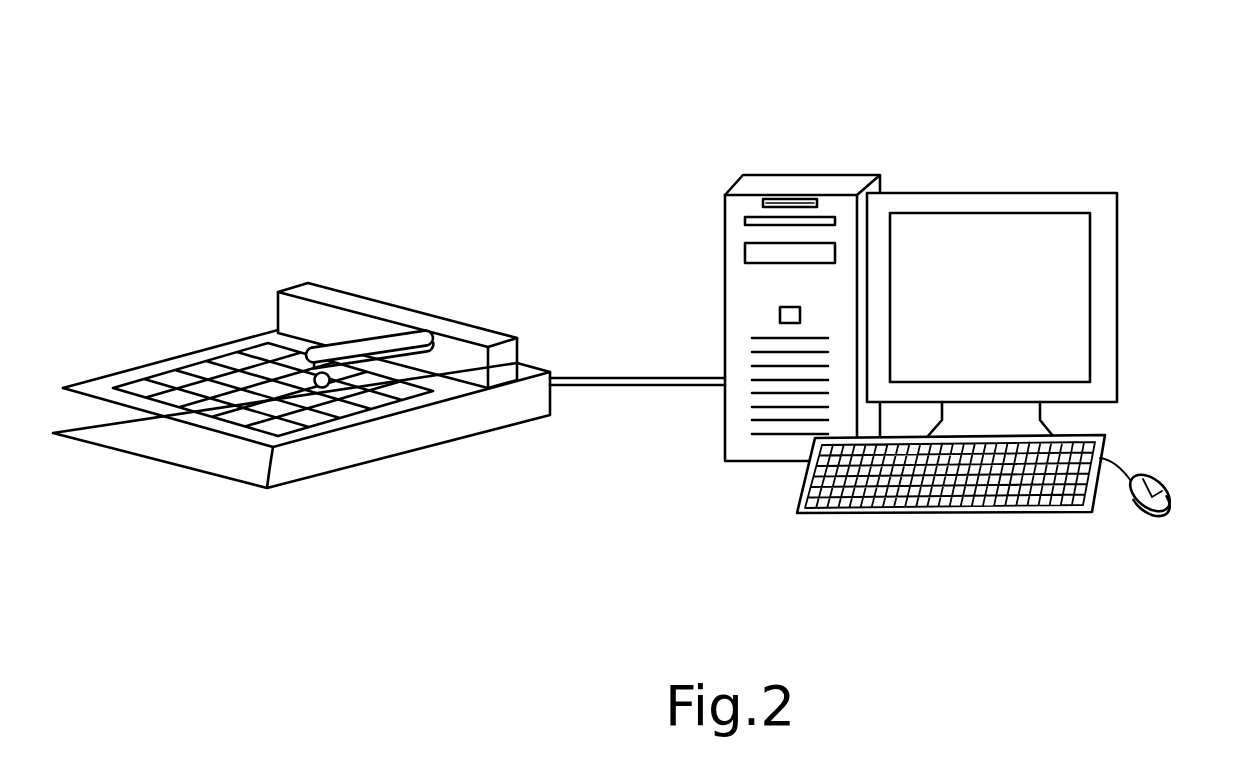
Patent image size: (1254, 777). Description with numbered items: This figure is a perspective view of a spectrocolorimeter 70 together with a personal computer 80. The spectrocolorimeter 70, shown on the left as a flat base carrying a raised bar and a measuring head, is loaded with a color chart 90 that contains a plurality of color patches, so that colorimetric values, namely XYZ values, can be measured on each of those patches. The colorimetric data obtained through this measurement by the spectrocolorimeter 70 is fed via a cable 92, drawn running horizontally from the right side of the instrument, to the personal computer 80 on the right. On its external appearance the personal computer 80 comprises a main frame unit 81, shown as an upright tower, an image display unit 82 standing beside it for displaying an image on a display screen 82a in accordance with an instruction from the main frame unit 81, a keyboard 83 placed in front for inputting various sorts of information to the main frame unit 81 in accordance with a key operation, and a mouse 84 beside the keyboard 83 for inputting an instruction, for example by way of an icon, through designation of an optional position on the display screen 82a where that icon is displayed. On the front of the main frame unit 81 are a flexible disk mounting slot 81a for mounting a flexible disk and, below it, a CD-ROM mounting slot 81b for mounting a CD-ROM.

The spectrocolorimeter 70 is at (301, 343).
The color chart 90 is at (138, 385).
The cable 92 is at (635, 392).
The personal computer 80 is at (933, 279).
The main frame unit 81 is at (753, 275).
The flexible disk (FD) mounting slot 81a is at (745, 221).
The CD-ROM mounting slot 81b is at (745, 250).
The image display unit 82 is at (1033, 272).
The display screen 82a is at (1087, 270).
The keyboard 83 is at (1100, 452).
The mouse 84 is at (1163, 490).